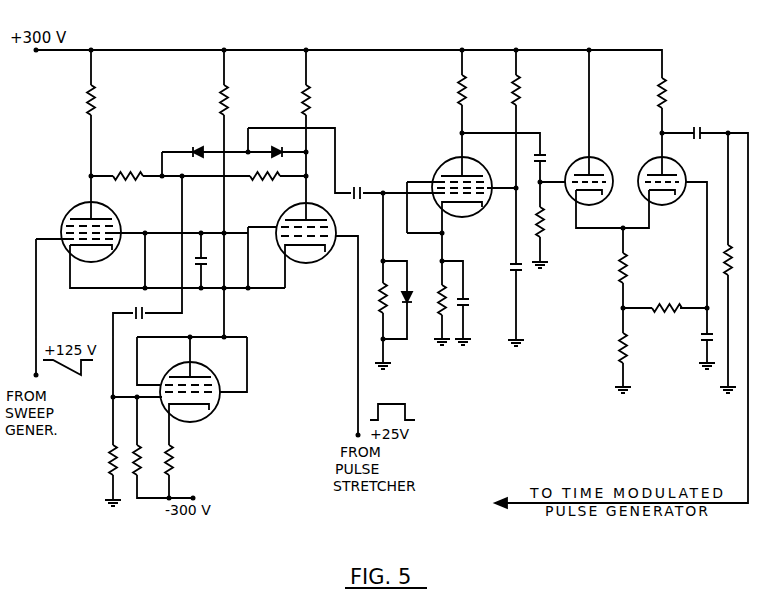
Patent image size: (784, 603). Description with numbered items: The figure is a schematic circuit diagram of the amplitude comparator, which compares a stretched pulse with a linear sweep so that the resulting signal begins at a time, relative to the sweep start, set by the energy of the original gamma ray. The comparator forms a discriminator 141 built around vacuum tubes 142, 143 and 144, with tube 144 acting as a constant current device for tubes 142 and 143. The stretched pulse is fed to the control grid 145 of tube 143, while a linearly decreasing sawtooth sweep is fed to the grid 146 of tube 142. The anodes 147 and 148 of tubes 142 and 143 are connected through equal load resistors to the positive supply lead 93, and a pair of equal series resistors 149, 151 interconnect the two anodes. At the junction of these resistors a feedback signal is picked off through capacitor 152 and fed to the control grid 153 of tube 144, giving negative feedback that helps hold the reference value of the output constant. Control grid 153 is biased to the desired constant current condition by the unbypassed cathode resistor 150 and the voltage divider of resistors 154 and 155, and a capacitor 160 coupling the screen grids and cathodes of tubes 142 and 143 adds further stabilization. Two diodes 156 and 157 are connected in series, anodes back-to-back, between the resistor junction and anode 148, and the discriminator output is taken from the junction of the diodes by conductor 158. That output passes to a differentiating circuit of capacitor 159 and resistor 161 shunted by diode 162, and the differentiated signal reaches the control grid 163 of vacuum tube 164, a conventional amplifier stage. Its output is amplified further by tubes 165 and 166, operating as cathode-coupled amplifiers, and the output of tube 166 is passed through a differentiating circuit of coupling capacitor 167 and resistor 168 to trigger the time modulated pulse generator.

The positive supply lead (+300 V bus) 93 is at (385, 49).
The discriminator 141 is at (177, 267).
The vacuum tube 142 is at (117, 211).
The vacuum tube 143 is at (300, 262).
The vacuum tube 144 is at (190, 420).
The control grid 145 is at (325, 246).
The grid 146 is at (64, 234).
The anode 147 is at (70, 214).
The anode 148 is at (333, 222).
The series resistor 149 is at (128, 174).
The unbypassed resistor 150 is at (178, 462).
The series resistor 151 is at (265, 182).
The capacitor 152 is at (136, 310).
The control grid 153 is at (220, 405).
The resistor 154 is at (138, 472).
The resistor 155 is at (108, 466).
The diode 156 is at (200, 150).
The diode 157 is at (275, 148).
The conductor 158 is at (340, 138).
The capacitor 159 is at (360, 186).
The capacitor 160 is at (208, 260).
The resistor 161 is at (378, 300).
The diode 162 is at (406, 292).
The control grid 163 is at (485, 207).
The vacuum tube 164 is at (445, 165).
The tube 165 is at (600, 160).
The tube 166 is at (672, 205).
The coupling capacitor 167 is at (700, 125).
The resistor 168 is at (725, 258).